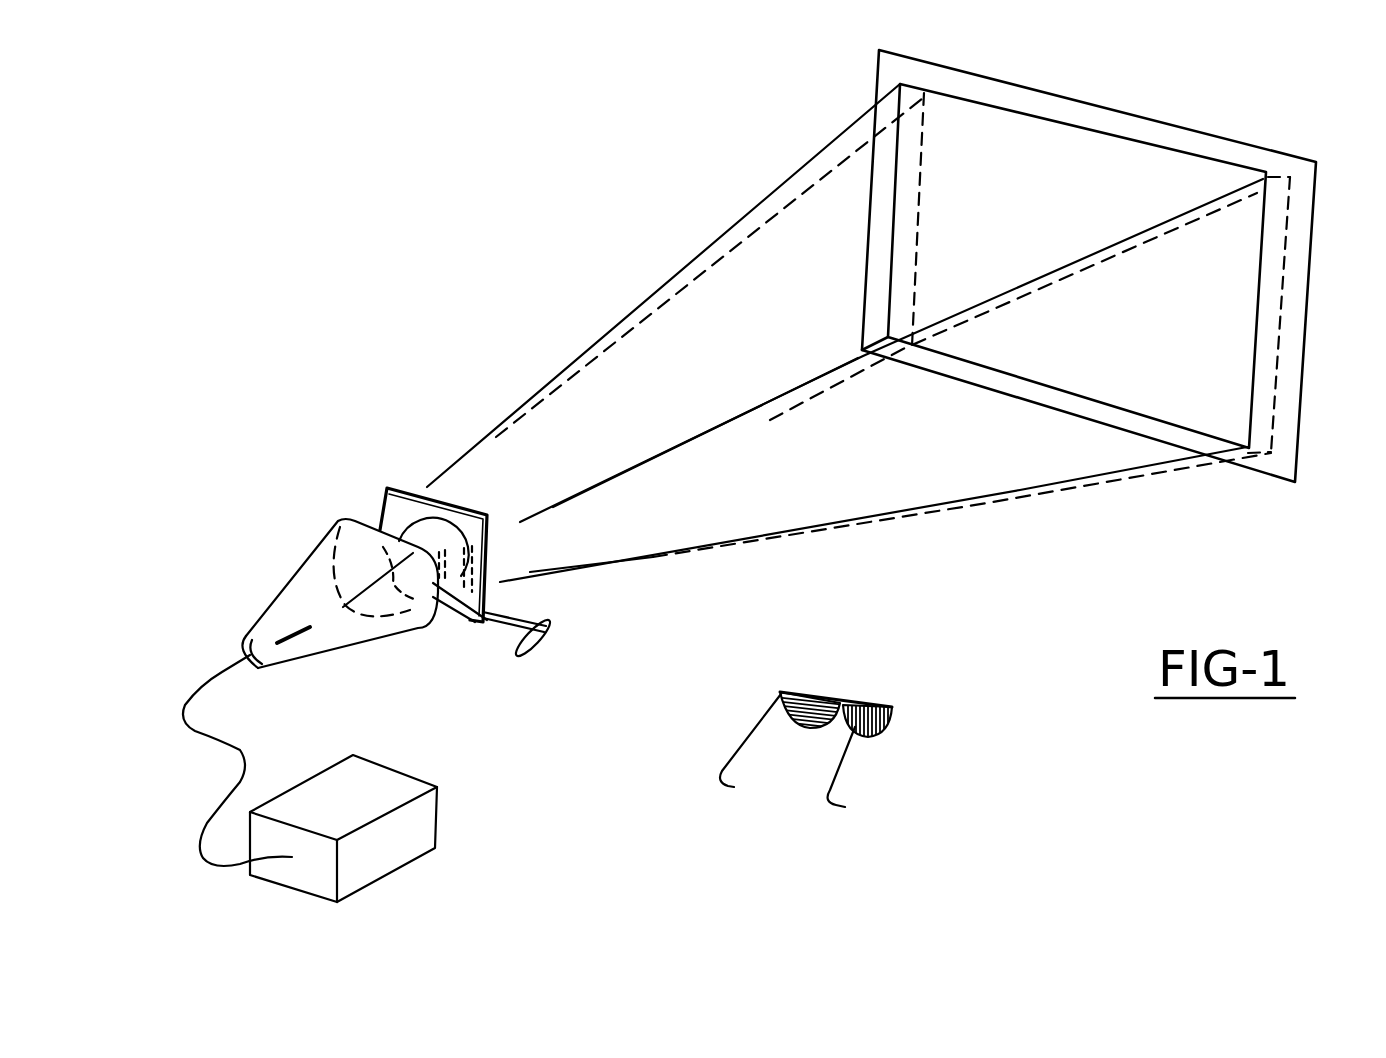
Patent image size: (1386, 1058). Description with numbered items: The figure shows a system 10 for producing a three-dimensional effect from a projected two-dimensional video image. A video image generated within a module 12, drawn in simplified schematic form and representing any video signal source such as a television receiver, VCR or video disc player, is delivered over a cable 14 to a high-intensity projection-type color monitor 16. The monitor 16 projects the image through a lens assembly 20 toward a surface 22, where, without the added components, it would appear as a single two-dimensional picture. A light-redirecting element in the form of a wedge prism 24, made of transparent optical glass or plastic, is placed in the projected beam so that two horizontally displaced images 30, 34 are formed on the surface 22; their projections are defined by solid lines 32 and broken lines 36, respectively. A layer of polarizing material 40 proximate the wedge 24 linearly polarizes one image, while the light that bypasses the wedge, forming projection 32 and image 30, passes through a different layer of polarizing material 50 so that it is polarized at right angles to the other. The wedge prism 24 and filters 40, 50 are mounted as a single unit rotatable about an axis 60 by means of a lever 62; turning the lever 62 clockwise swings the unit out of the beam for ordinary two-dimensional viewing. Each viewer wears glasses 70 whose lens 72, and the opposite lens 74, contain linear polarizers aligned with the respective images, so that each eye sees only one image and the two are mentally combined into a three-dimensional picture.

The system 10 is at (350, 168).
The module 12 is at (403, 792).
The cable 14 is at (218, 673).
The high-intensity projection-type color monitor 16 is at (320, 563).
The lens assembly 20 is at (383, 508).
The surface 22 is at (1215, 138).
The wedge prism 24 is at (891, 365).
The image 30 is at (892, 251).
The solid lines 32 is at (829, 146).
The image 34 is at (1282, 249).
The broken lines 36 is at (1002, 499).
The layer of polarizing material 40 is at (470, 625).
The layer of polarizing material 50 is at (480, 517).
The axis 60 is at (530, 612).
The lever 62 is at (547, 633).
The glasses 70 is at (893, 730).
The lens 72 is at (810, 693).
The right lens 74 is at (882, 703).